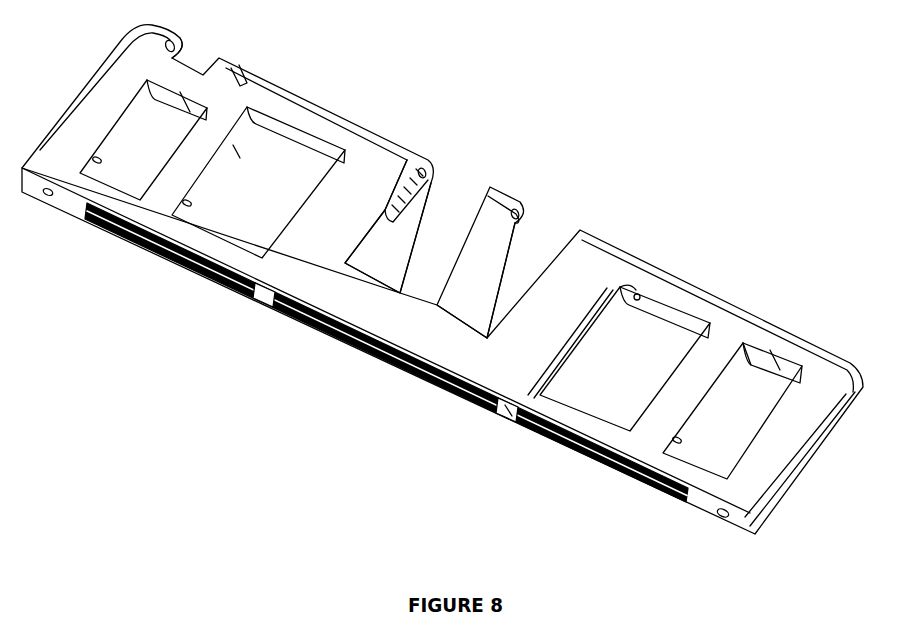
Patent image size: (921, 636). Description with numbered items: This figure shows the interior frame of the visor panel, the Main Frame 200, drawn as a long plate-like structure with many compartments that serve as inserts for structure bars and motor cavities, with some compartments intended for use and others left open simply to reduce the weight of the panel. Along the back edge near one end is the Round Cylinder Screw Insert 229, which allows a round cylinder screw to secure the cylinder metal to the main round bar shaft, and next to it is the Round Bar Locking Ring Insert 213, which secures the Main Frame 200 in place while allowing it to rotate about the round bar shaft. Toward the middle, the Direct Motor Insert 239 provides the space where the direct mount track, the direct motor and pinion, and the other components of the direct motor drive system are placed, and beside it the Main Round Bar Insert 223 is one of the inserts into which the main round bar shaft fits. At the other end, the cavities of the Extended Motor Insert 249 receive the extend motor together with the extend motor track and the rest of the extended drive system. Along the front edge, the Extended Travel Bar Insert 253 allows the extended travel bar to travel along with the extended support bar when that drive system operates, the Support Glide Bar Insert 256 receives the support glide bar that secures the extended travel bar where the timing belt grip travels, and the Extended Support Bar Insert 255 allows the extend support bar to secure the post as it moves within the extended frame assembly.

The Main Frame 200 is at (410, 310).
The Round Bar Locking Ring Insert 213 is at (243, 73).
The Main Round Bar Insert 223 is at (527, 220).
The Round Cylinder Screw Insert 229 is at (182, 50).
The Direct Motor Insert 239 is at (410, 205).
The Extended Motor Insert 249 is at (730, 372).
The Extended Travel Bar Insert 253 is at (633, 292).
The Extended Support Bar Insert 255 is at (716, 516).
The Support Glide Bar Insert 256 is at (640, 298).